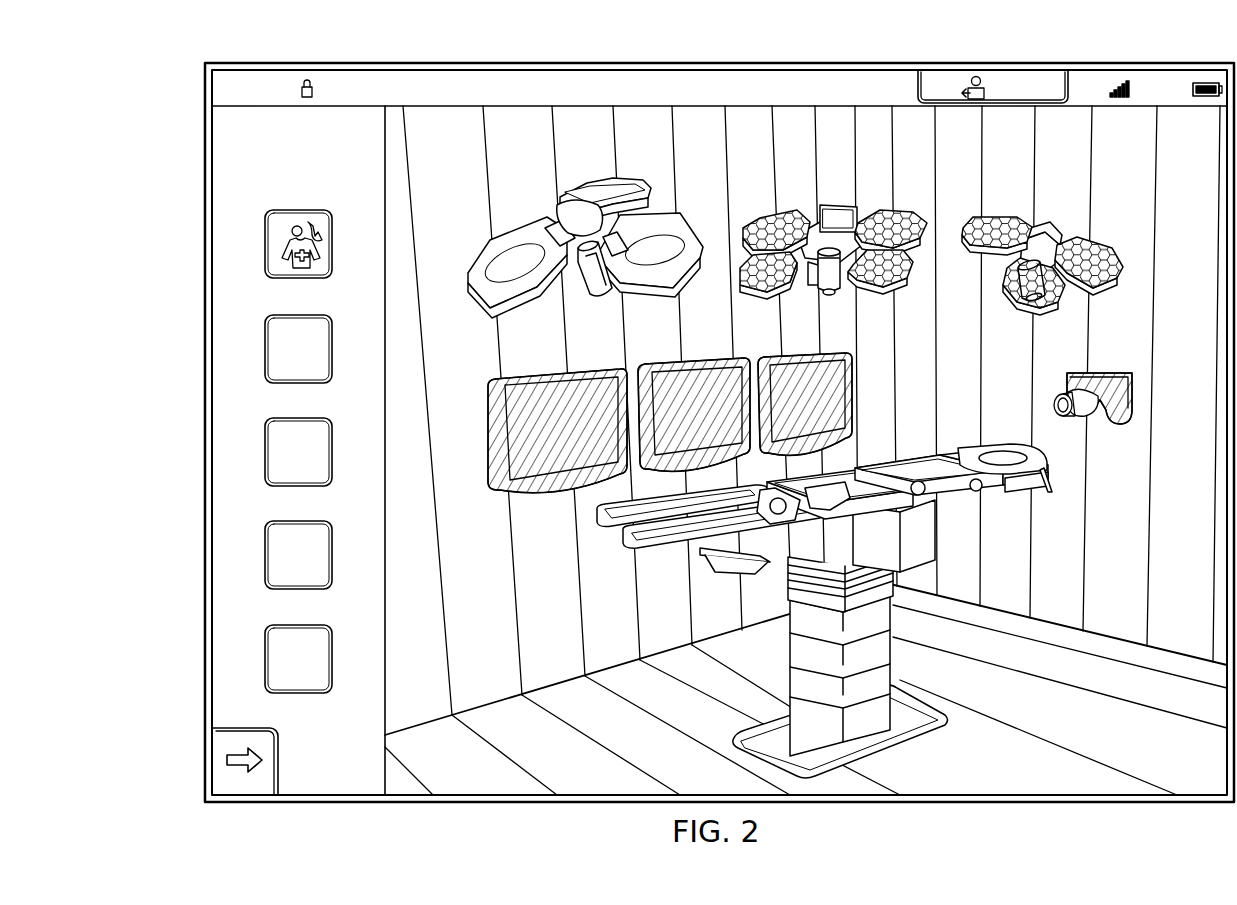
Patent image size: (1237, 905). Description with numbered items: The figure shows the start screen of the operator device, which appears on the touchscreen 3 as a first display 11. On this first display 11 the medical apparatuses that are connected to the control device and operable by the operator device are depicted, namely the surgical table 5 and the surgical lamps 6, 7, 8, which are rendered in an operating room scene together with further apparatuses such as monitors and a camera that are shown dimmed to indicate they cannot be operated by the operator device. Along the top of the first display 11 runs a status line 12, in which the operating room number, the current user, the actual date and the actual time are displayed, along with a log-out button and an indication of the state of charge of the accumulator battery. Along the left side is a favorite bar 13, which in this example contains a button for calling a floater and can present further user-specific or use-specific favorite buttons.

The touchscreen 3 is at (221, 44).
The surgical table 5 is at (853, 718).
The surgical lamp 6 is at (580, 200).
The surgical lamp 7 is at (842, 240).
The surgical lamp 8 is at (1045, 238).
The first display 11 is at (904, 58).
The status line 12 is at (1082, 90).
The favorite bar 13 is at (300, 135).